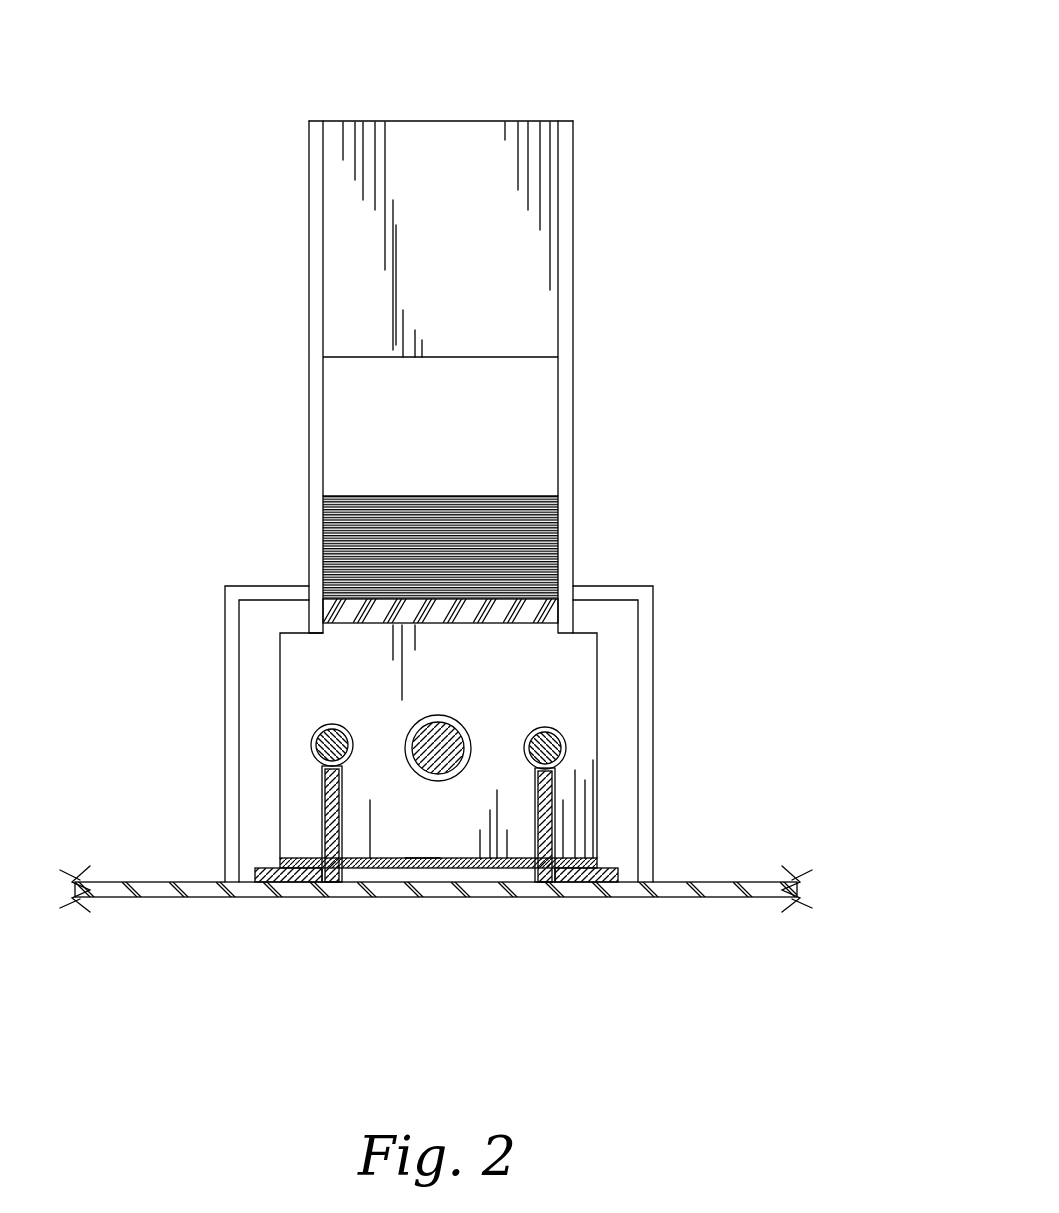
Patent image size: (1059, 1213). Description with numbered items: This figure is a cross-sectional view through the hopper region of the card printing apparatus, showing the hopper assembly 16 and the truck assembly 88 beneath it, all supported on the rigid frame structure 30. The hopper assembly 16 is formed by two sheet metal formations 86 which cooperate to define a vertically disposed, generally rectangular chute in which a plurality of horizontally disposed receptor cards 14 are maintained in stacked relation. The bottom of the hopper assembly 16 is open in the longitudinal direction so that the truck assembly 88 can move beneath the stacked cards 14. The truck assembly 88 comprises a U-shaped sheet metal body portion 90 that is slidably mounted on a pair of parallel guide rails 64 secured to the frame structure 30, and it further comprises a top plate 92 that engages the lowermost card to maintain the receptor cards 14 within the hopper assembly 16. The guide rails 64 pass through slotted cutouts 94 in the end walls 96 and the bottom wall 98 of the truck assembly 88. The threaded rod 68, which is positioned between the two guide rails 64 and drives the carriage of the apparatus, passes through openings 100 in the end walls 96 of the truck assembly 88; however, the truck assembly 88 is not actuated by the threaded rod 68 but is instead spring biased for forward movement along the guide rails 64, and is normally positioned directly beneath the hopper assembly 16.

The hopper assembly 16 is at (590, 173).
The sheet metal formations 86 is at (561, 327).
The receptor card 14 is at (515, 585).
The top plate 92 is at (323, 612).
The truck assembly 88 is at (585, 625).
The U-shaped sheet metal body portion 90 is at (283, 636).
The end walls 96 is at (307, 682).
The threaded rod 68 is at (457, 730).
The guide rails 64 is at (318, 737).
The slotted cutouts 94 is at (317, 760).
The bottom wall 98 is at (455, 868).
The openings 100 is at (420, 778).
The frame structure 30 is at (722, 880).